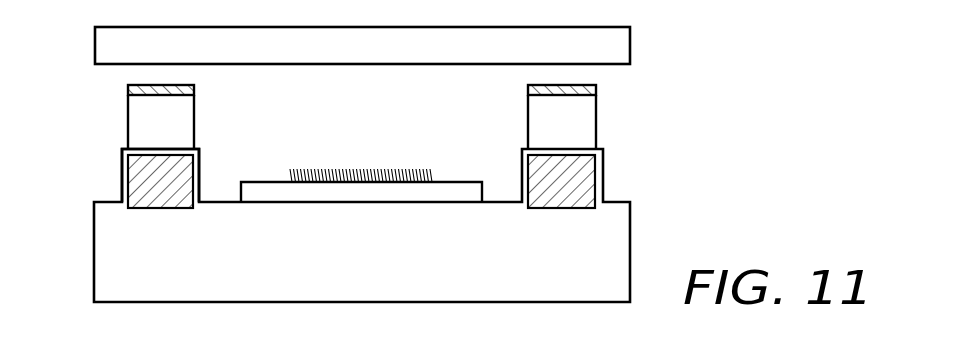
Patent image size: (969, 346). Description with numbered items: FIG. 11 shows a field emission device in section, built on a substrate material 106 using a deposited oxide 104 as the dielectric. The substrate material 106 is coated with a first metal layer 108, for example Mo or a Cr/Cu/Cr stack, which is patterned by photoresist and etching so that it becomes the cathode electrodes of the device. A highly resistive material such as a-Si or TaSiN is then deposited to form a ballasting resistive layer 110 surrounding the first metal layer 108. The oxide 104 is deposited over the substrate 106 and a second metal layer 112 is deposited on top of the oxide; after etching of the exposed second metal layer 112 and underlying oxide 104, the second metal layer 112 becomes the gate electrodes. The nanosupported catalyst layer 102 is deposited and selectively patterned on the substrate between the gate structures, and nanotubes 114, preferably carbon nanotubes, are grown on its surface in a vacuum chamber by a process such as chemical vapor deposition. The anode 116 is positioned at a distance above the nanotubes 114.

The nanosupported catalyst layer 102 is at (462, 182).
The deposited oxide 104 is at (183, 113).
The substrate material 106 is at (110, 256).
The first metal layer 108 is at (137, 193).
The ballasting resistive layer 110 is at (123, 154).
The second metal layer 112 is at (127, 90).
The nanotubes 114 is at (317, 170).
The anode 116 is at (622, 52).